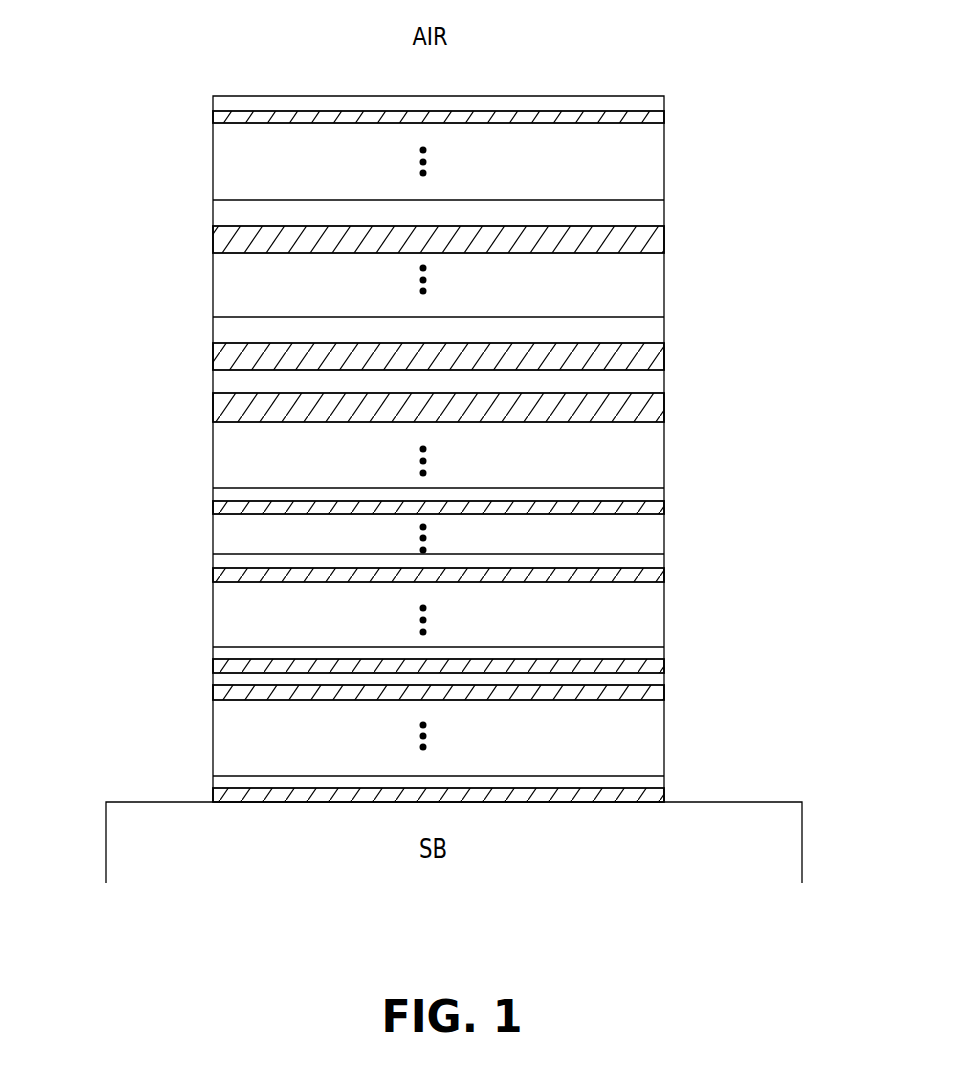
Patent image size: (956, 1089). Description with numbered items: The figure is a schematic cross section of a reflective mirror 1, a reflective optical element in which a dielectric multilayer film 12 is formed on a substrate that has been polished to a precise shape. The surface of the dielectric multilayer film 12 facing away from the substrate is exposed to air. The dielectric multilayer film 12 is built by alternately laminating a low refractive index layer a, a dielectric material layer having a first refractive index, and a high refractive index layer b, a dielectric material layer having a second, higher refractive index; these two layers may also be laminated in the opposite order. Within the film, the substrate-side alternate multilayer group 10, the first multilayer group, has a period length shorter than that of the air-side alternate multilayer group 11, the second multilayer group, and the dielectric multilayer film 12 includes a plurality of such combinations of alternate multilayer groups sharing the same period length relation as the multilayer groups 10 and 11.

The reflective mirror 1 is at (705, 97).
The substrate-side alternate multilayer group 10 is at (682, 550).
The air-side alternate multilayer group 11 is at (680, 197).
The dielectric multilayer film 12 is at (96, 85).
The low refractive index layer a is at (213, 214).
The high refractive index layer b is at (213, 241).